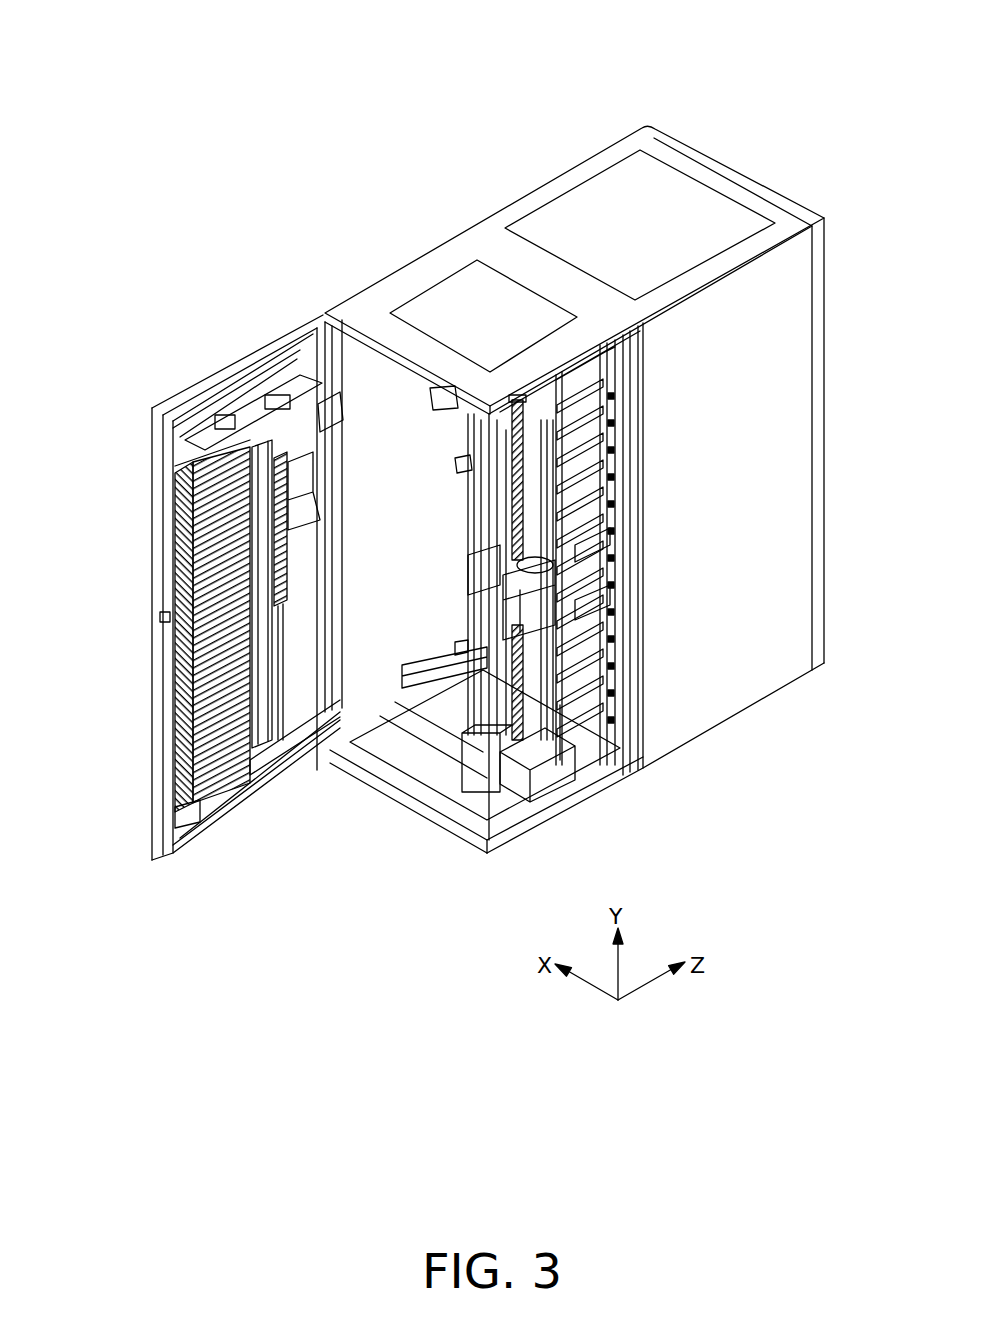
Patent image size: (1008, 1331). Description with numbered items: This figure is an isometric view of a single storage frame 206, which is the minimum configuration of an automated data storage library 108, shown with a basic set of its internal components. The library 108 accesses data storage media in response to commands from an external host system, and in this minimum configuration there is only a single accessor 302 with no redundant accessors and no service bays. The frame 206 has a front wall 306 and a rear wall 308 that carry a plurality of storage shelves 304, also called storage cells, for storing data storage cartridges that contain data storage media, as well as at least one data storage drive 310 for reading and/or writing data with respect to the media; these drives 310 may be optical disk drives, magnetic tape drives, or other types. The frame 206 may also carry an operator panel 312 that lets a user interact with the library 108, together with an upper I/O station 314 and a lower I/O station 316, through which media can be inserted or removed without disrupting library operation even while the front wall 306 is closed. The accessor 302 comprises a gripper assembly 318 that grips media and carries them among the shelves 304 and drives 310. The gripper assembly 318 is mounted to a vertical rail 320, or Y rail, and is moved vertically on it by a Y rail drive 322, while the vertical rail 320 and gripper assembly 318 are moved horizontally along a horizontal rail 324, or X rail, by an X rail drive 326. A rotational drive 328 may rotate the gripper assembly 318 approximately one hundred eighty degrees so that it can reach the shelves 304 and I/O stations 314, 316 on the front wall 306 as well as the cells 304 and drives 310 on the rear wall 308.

The automated data storage library 108 is at (466, 437).
The storage frame 206 is at (653, 182).
The accessor 302 is at (523, 758).
The storage shelves 304 is at (182, 658).
The front wall 306 is at (165, 538).
The rear wall 308 is at (633, 457).
The data storage drive 310 is at (567, 420).
The operator panel 312 is at (338, 420).
The upper I/O station 314 is at (307, 437).
The lower I/O station 316 is at (287, 605).
The gripper assembly 318 is at (585, 612).
The vertical rail 320 is at (503, 640).
The Y rail drive 322 is at (468, 565).
The horizontal rail 324 is at (420, 672).
The X rail drive 326 is at (470, 762).
The rotational drive 328 is at (580, 562).